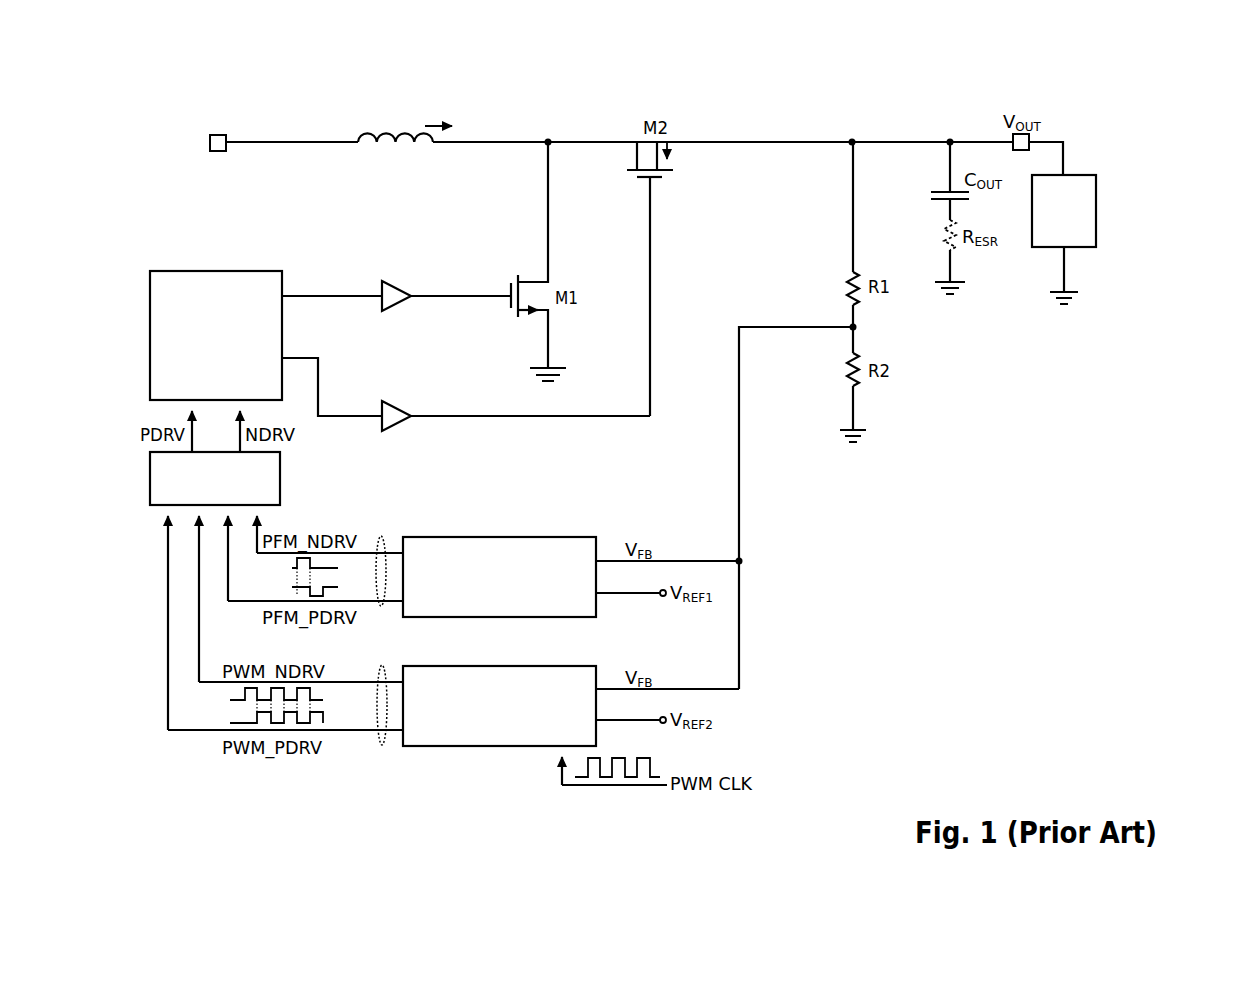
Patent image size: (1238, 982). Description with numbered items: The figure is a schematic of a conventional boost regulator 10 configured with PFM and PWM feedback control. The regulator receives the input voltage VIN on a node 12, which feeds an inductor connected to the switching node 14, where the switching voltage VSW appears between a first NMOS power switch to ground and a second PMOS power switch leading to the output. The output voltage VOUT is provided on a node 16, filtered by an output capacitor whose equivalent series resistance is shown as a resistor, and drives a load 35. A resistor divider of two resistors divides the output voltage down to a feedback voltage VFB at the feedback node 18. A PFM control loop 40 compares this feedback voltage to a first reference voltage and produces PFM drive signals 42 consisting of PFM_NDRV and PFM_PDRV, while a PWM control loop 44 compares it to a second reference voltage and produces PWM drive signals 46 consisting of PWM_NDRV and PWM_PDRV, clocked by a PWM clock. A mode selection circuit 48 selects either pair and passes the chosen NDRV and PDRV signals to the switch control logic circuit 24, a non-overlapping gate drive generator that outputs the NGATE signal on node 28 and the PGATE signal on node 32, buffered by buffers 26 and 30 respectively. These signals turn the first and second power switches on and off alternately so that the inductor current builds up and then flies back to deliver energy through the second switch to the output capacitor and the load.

The boost regulator 10 is at (1084, 98).
The node 12 is at (218, 135).
The switching node 14 is at (545, 145).
The node 16 is at (899, 141).
The feedback node 18 is at (850, 330).
The switch control logic circuit 24 is at (228, 391).
The buffer 26 is at (397, 303).
The node 28 is at (463, 298).
The buffer 30 is at (397, 423).
The node 32 is at (483, 418).
The load 35 is at (1097, 196).
The PFM control loop 40 is at (555, 537).
The PFM drive signals 42 is at (382, 607).
The PWM control loop 44 is at (555, 666).
The PWM drive signals 46 is at (383, 746).
The mode selection circuit 48 is at (282, 480).